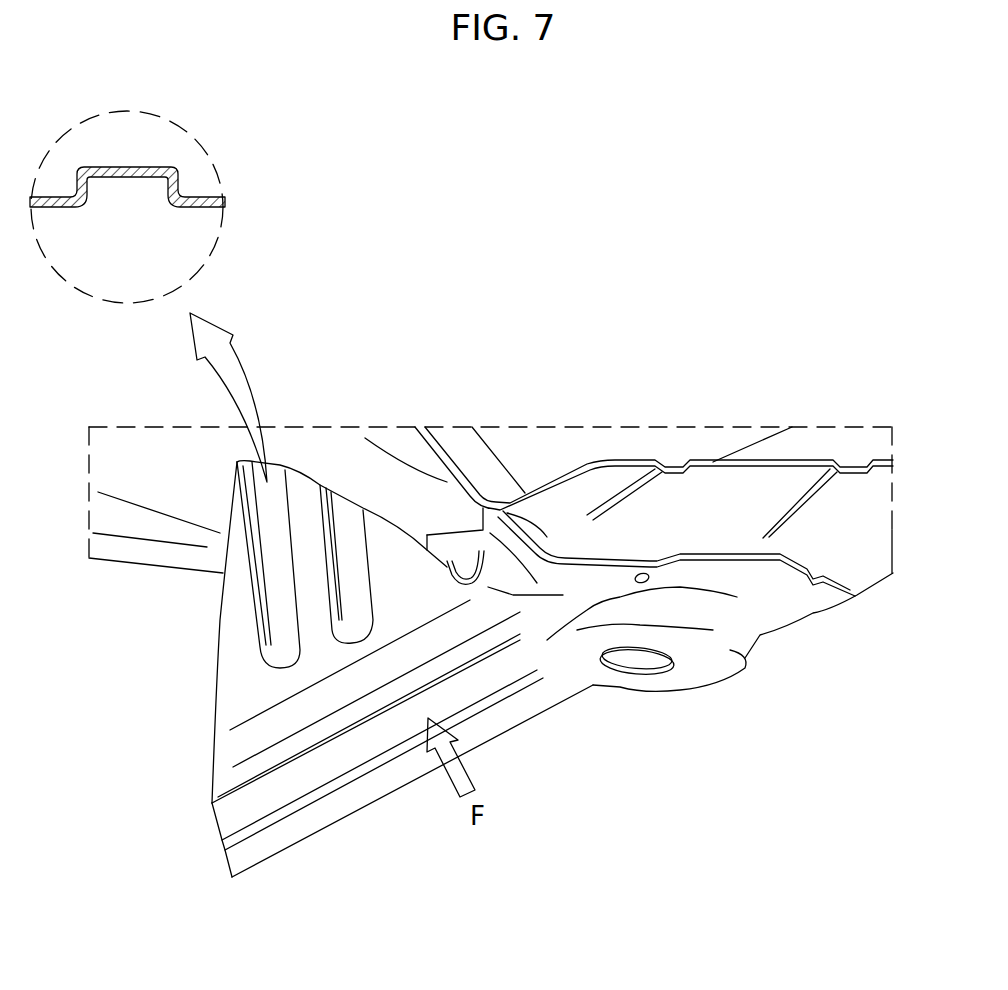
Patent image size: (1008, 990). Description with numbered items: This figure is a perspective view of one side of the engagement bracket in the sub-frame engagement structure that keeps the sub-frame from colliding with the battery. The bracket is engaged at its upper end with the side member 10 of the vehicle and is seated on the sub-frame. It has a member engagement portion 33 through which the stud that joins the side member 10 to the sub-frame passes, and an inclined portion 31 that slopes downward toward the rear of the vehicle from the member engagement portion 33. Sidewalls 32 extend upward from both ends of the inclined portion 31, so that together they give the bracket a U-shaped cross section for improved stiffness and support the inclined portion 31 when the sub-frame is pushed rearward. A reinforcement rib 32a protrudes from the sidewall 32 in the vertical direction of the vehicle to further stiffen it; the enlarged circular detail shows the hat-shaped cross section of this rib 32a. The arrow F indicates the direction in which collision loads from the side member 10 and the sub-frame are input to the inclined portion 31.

The side member 10 is at (353, 455).
The inclined portion 31 is at (350, 777).
The sidewall 32 is at (233, 643).
The reinforcement rib 32a is at (263, 597).
The member engagement portion 33 is at (745, 658).